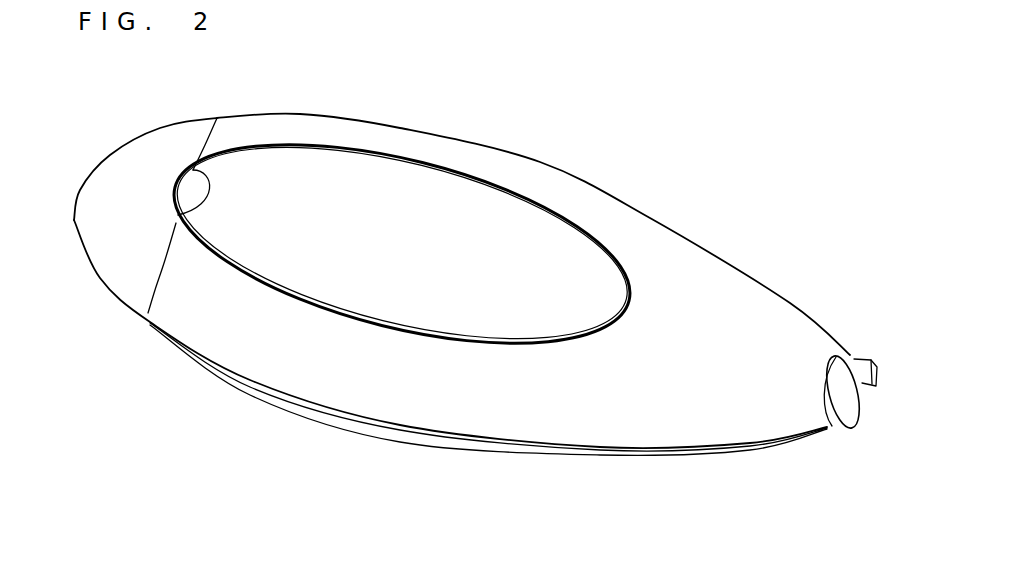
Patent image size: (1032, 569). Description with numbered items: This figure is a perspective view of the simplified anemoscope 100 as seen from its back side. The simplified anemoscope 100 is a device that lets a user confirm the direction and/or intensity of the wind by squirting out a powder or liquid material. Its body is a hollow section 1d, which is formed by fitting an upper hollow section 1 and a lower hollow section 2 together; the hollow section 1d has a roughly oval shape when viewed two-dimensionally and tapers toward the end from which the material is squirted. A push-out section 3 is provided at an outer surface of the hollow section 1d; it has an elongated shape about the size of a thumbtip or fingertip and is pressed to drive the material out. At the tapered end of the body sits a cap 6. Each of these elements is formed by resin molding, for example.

The simplified anemoscope 100 is at (364, 519).
The upper hollow section 1 is at (450, 378).
The hollow section 1d is at (549, 403).
The lower hollow section 2 is at (600, 213).
The push-out section 3 is at (457, 195).
The cap 6 is at (848, 402).